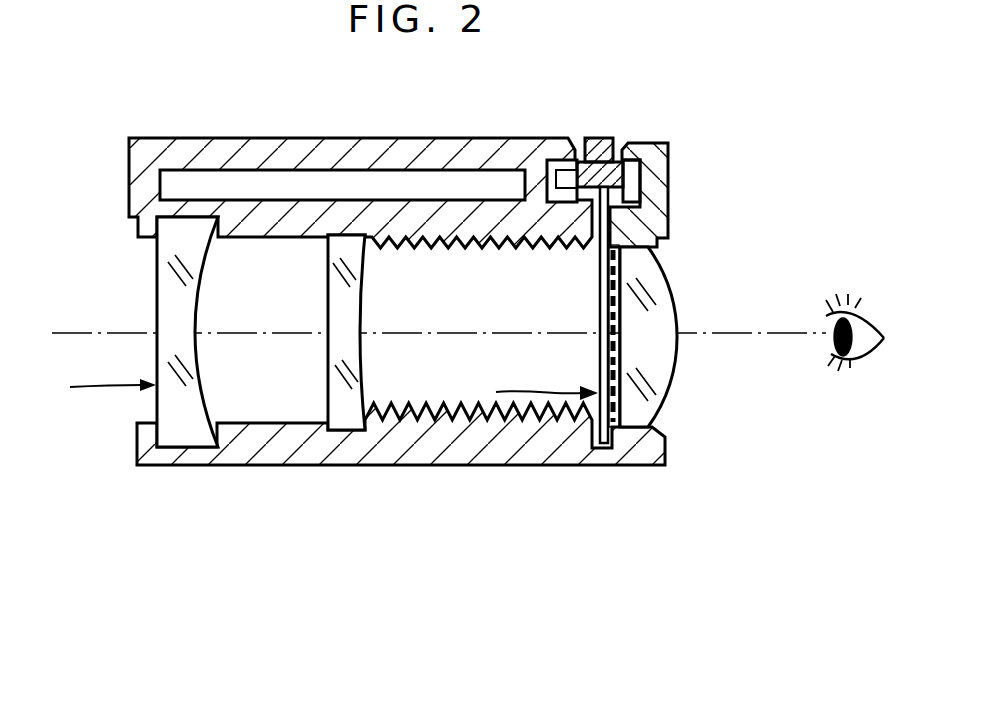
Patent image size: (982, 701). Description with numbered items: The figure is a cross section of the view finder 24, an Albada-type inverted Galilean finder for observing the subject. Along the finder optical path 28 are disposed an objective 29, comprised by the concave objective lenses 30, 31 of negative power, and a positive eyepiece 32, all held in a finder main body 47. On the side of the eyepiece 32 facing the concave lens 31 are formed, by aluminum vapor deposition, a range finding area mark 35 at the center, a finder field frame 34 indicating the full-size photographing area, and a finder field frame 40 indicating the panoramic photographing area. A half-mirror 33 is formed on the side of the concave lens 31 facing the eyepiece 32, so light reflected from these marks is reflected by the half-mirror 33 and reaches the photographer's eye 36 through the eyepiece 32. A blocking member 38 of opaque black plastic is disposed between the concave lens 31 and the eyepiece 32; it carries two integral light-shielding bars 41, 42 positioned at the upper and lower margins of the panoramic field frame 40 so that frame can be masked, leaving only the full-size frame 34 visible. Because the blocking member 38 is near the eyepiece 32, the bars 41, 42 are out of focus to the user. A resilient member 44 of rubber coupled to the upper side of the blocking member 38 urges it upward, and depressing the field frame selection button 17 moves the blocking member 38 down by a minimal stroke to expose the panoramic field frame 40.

The field frame selection button 17 is at (597, 137).
The view finder 24 is at (92, 387).
The finder optical path 28 is at (70, 330).
The objective 29 is at (261, 423).
The concave objective lens 30 is at (187, 448).
The concave objective lens 31 is at (345, 406).
The eyepiece 32 is at (665, 292).
The half-mirror 33 is at (368, 284).
The finder field frame 34 is at (600, 262).
The range finding area mark 35 is at (600, 345).
The photographer's eye 36 is at (866, 355).
The blocking member 38 is at (526, 392).
The finder field frame 40 is at (600, 314).
The light-shielding bar 41 is at (600, 298).
The light-shielding bar 42 is at (600, 378).
The resilient member 44 is at (609, 137).
The finder main body 47 is at (512, 466).